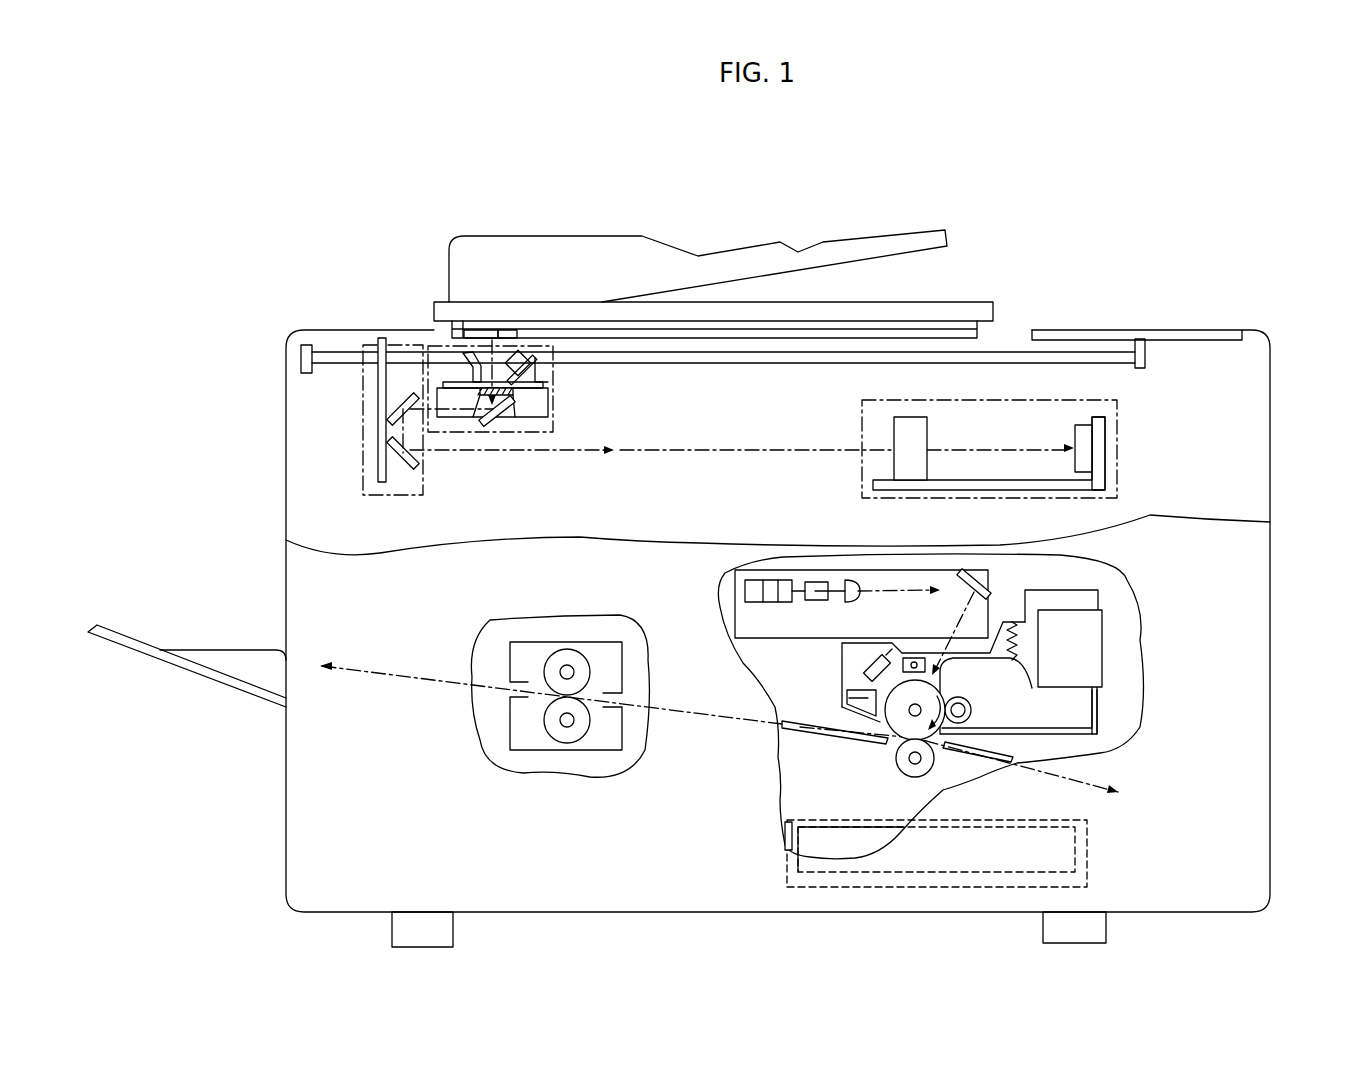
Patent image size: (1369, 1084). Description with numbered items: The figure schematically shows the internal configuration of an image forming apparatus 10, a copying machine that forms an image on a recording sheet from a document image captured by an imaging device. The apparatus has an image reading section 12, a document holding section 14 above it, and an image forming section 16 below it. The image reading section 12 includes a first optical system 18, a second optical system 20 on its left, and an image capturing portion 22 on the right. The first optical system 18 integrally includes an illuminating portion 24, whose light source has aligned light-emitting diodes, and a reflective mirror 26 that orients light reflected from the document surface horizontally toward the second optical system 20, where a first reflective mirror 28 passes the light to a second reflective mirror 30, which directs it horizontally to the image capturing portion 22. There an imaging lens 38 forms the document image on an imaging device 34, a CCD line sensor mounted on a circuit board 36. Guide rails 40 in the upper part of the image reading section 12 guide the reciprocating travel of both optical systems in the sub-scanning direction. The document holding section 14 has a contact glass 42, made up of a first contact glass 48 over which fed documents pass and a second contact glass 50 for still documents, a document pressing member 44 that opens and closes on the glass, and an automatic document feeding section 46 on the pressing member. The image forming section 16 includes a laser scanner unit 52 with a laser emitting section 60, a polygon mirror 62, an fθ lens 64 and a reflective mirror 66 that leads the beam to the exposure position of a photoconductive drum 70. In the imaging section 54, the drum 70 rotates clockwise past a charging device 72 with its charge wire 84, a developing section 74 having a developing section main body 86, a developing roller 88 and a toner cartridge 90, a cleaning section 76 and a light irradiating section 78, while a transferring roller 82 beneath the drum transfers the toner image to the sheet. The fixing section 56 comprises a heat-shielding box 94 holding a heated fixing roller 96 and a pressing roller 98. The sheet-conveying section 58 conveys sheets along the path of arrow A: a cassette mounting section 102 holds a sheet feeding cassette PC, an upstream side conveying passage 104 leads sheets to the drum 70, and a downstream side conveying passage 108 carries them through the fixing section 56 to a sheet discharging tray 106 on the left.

The image forming apparatus 10 is at (759, 171).
The image reading section 12 is at (1240, 458).
The document holding section 14 is at (1003, 322).
The image forming section 16 is at (1245, 637).
The first optical system 18 is at (580, 420).
The second optical system 20 is at (362, 443).
The image capturing portion 22 is at (861, 426).
The illuminating portion 24 is at (545, 373).
The reflective mirror 26 is at (500, 423).
The first reflective mirror 28 is at (395, 401).
The second reflective mirror 30 is at (405, 463).
The imaging device 34 is at (1078, 433).
The circuit board 36 is at (1100, 449).
The imaging lens 38 is at (910, 428).
The guide rails 40 is at (1080, 357).
The contact glass 42 is at (578, 170).
The document pressing member 44 is at (810, 308).
The automatic document feeding section 46 is at (797, 252).
The first contact glass 48 is at (490, 330).
The second contact glass 50 is at (567, 337).
The laser scanner unit 52 is at (856, 566).
The imaging section 54 is at (828, 712).
The fixing section 56 is at (592, 632).
The sheet-conveying section 58 is at (1012, 752).
The laser emitting section 60 is at (818, 581).
The polygon mirror 62 is at (762, 578).
The fθ lens 64 is at (858, 585).
The reflective mirror 66 is at (989, 577).
The photoconductive drum 70 is at (897, 703).
The charging device 72 is at (918, 658).
The developing section 74 is at (1097, 717).
The cleaning section 76 is at (848, 695).
The light irradiating section 78 is at (863, 658).
The transferring roller 82 is at (900, 760).
The charge wire 84 is at (898, 655).
The developing section main body 86 is at (1078, 697).
The developing roller 88 is at (972, 715).
The toner cartridge 90 is at (1098, 622).
The heat-shielding box 94 is at (548, 642).
The fixing roller 96 is at (587, 657).
The pressing roller 98 is at (583, 728).
The cassette mounting section 102 is at (788, 833).
The upstream side conveying passage 104 is at (973, 757).
The sheet discharging tray 106 is at (170, 660).
The downstream side conveying passage 108 is at (810, 733).
The arrow A is at (695, 717).
The sheet feeding cassette PC is at (817, 843).